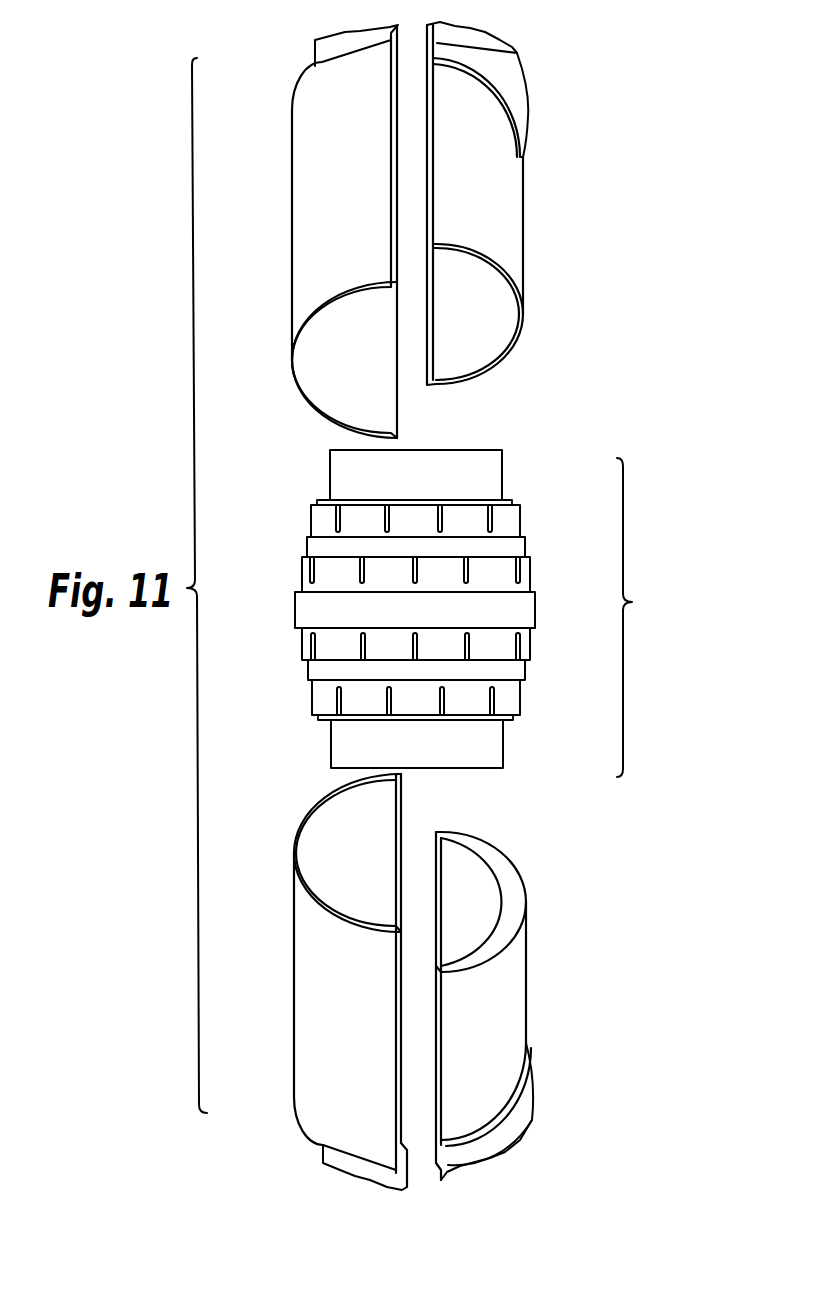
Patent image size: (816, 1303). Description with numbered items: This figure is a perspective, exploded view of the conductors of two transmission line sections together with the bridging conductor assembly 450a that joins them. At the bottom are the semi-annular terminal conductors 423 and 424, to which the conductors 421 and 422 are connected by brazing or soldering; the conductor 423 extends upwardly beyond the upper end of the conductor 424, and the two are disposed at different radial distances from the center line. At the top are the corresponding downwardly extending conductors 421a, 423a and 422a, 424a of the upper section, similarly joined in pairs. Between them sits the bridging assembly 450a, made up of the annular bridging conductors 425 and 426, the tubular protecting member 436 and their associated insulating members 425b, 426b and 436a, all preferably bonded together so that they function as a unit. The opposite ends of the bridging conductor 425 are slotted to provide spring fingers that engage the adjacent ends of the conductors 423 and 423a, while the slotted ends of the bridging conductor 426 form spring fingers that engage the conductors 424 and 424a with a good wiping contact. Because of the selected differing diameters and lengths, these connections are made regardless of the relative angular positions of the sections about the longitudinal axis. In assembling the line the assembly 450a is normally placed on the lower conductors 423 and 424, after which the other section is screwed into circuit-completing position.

The conductor 421 is at (328, 1157).
The downwardly extending conductor 421a is at (325, 50).
The conductor 422 is at (520, 1145).
The downwardly extending conductor 422a is at (510, 58).
The semi-annular terminal conductor 423 is at (300, 1015).
The downwardly extending conductor 423a is at (300, 172).
The semi-annular terminal conductor 424 is at (530, 990).
The downwardly extending conductor 424a is at (518, 202).
The annular bridging conductor 425 is at (532, 640).
The insulating member 425b is at (300, 610).
The annular bridging conductor 426 is at (517, 522).
The insulating member 426b is at (317, 670).
The tubular protecting member 436 is at (335, 463).
The insulating member 436a is at (317, 718).
The bridging conductor assembly 450a is at (692, 615).